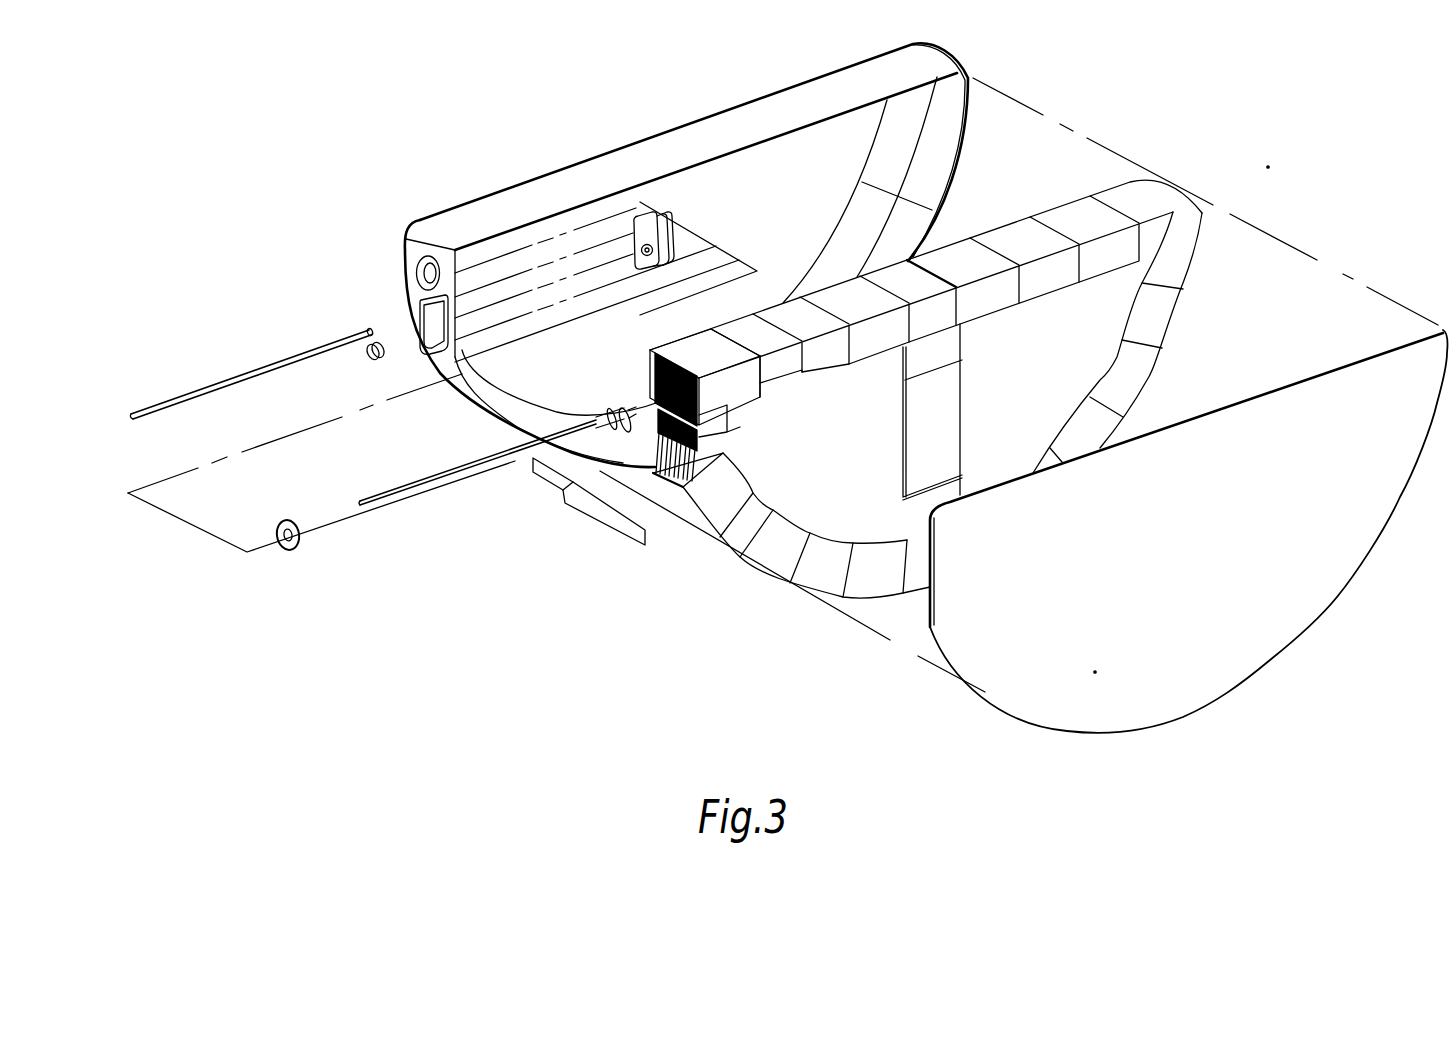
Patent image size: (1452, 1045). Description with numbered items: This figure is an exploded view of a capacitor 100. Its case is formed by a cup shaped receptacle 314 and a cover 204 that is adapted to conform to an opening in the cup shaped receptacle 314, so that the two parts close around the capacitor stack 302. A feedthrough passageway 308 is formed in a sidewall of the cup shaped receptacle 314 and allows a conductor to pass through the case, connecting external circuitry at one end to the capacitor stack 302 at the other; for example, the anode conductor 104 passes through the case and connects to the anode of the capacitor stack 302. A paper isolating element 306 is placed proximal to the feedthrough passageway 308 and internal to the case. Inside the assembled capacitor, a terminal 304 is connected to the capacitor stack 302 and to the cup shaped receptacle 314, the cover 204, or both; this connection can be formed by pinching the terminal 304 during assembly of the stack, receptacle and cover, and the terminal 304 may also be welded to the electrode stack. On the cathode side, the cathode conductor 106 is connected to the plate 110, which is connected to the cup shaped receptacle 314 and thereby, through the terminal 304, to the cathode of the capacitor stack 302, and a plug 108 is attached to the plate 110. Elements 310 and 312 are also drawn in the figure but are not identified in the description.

The capacitor 100 is at (1283, 122).
The anode conductor 104 is at (430, 472).
The cathode conductor 106 is at (248, 372).
The plug 108 is at (375, 360).
The plate 110 is at (646, 213).
The cover 204 is at (1293, 635).
The capacitor stack 302 is at (822, 513).
The terminal 304 is at (612, 522).
The paper isolating element 306 is at (297, 548).
The feedthrough passageway 308 is at (414, 277).
The connector 310 is at (650, 397).
The connector pins 312 is at (703, 472).
The cup shaped receptacle 314 is at (702, 133).